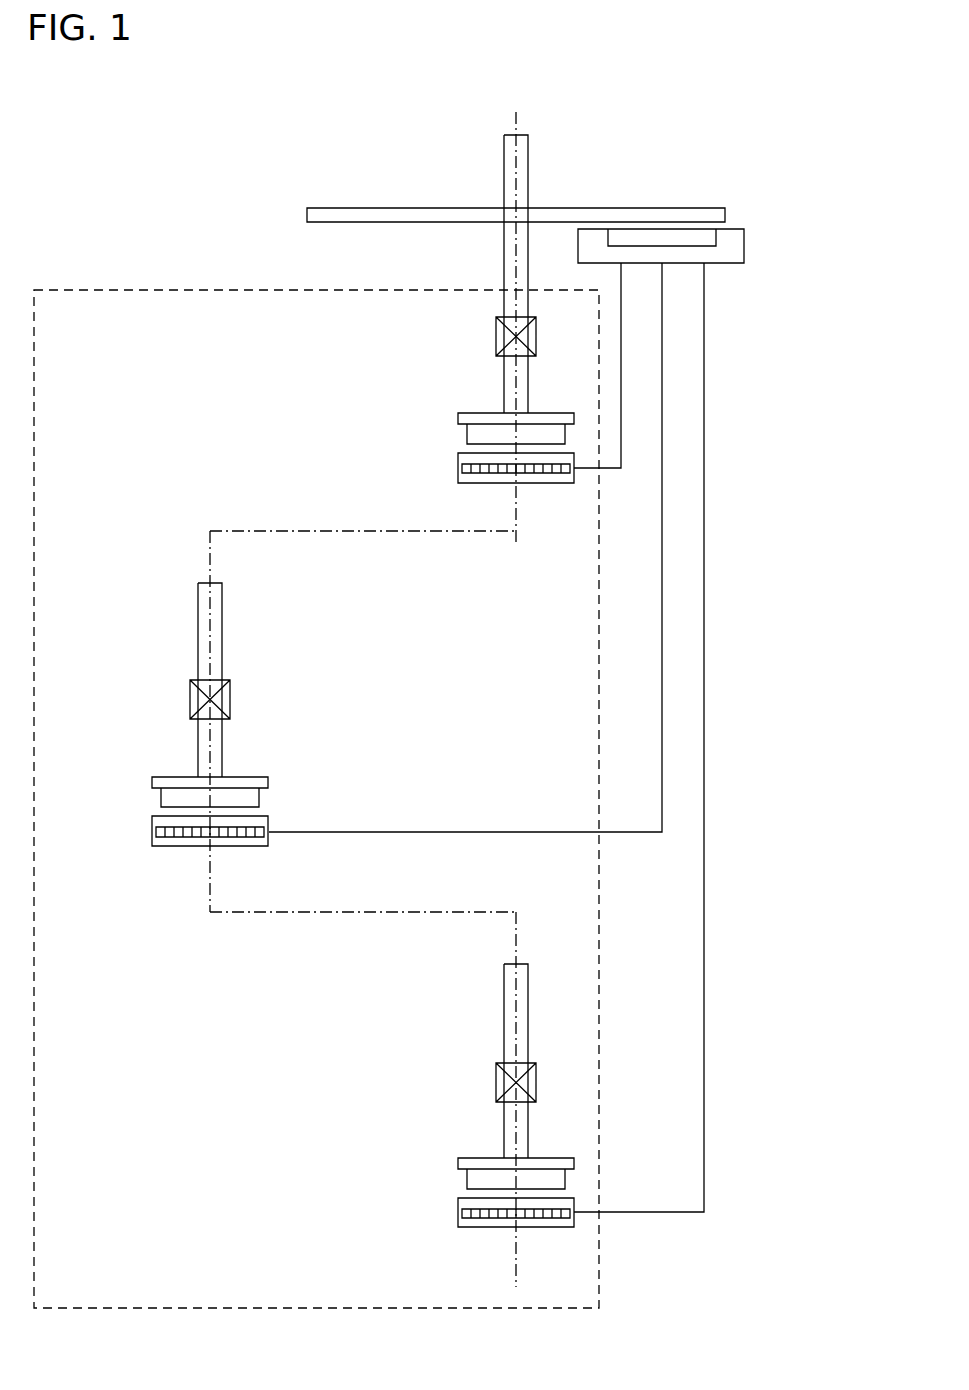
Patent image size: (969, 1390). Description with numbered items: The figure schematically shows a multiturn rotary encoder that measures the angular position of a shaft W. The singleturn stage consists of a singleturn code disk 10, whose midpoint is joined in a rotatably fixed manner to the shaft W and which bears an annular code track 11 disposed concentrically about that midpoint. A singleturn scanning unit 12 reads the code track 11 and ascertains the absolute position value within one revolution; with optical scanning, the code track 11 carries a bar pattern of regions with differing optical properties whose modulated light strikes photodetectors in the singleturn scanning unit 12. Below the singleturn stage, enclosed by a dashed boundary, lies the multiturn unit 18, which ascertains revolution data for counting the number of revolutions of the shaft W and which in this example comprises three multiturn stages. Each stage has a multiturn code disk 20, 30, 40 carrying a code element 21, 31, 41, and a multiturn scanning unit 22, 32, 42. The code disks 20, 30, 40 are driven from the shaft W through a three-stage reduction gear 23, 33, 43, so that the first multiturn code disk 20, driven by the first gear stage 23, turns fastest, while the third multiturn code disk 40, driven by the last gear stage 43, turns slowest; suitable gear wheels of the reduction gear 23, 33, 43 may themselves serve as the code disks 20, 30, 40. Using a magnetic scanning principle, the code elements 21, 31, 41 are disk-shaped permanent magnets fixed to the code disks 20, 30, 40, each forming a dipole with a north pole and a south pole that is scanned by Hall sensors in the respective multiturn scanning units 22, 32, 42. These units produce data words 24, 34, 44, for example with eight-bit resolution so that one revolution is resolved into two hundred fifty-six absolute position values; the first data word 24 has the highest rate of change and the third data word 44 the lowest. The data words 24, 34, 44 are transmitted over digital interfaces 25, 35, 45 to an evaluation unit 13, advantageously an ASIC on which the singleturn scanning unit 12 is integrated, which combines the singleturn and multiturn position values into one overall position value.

The shaft W is at (522, 152).
The singleturn code disk 10 is at (317, 212).
The code track 11 is at (677, 213).
The singleturn scanning unit 12 is at (710, 237).
The evaluation unit 13 is at (730, 255).
The multiturn unit 18 is at (100, 288).
The first multiturn code disk 20 is at (478, 418).
The code element 21 is at (475, 435).
The first multiturn scanning unit 22 is at (468, 477).
The first gear stage 23 is at (496, 336).
The first data word 24 is at (548, 470).
The digital interface 25 is at (622, 350).
The second multiturn code disk 30 is at (170, 780).
The code element 31 is at (168, 797).
The second multiturn scanning unit 32 is at (160, 838).
The second gear stage 33 is at (190, 698).
The second data word 34 is at (242, 835).
The digital interface 35 is at (663, 403).
The third multiturn code disk 40 is at (478, 1163).
The code element 41 is at (470, 1178).
The third multiturn scanning unit 42 is at (468, 1221).
The third gear stage 43 is at (496, 1082).
The third data word 44 is at (548, 1213).
The digital interface 45 is at (705, 472).